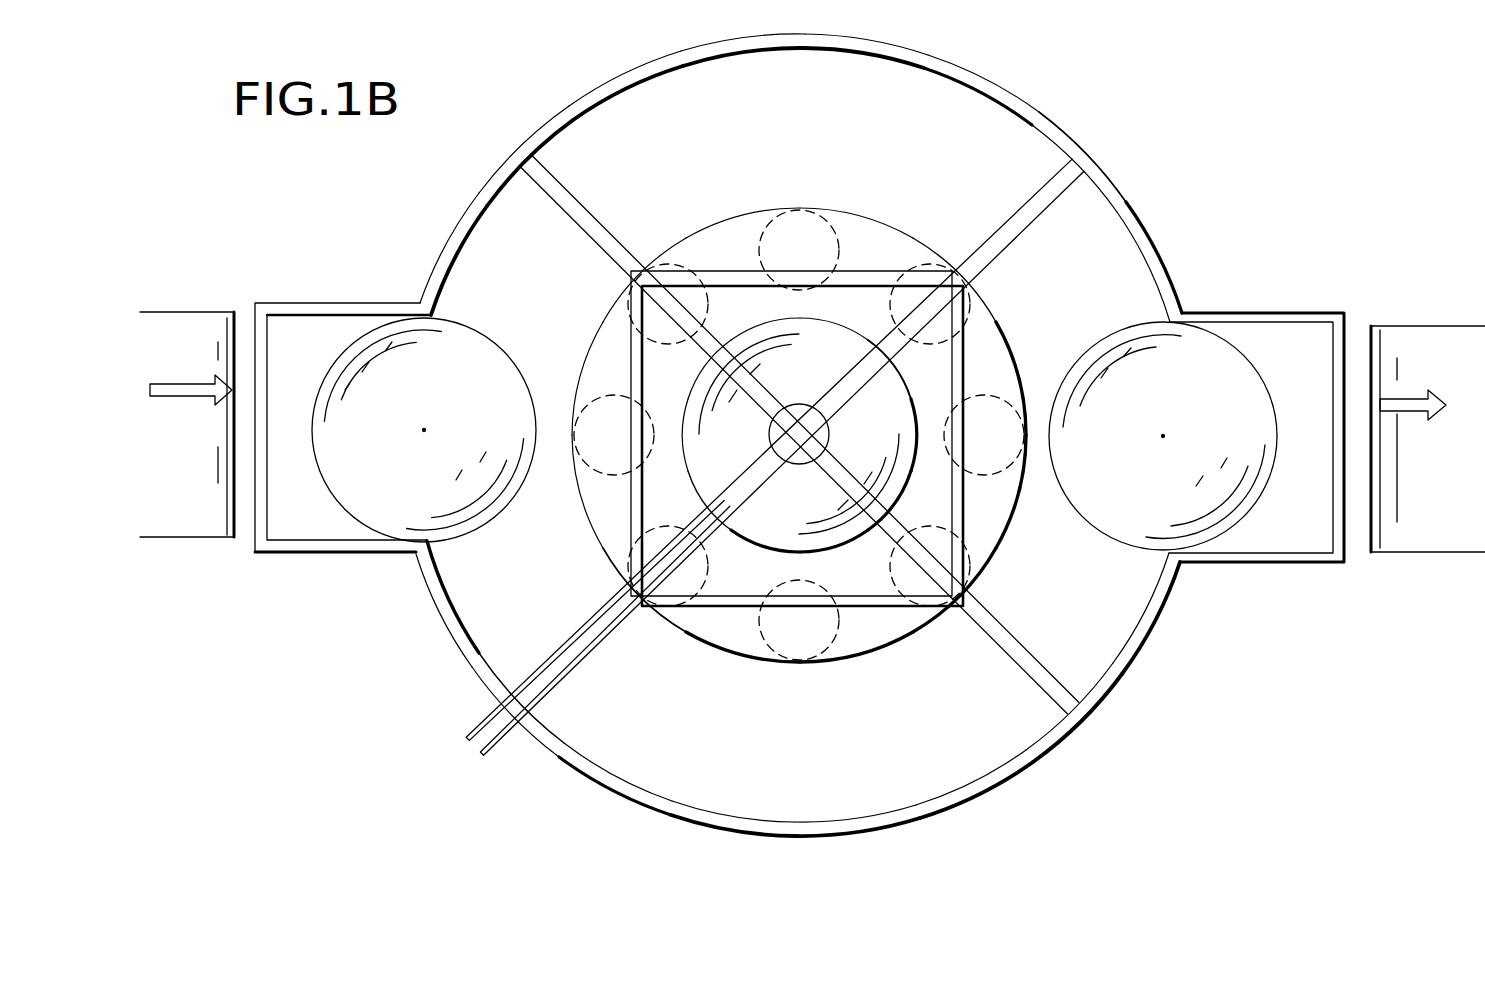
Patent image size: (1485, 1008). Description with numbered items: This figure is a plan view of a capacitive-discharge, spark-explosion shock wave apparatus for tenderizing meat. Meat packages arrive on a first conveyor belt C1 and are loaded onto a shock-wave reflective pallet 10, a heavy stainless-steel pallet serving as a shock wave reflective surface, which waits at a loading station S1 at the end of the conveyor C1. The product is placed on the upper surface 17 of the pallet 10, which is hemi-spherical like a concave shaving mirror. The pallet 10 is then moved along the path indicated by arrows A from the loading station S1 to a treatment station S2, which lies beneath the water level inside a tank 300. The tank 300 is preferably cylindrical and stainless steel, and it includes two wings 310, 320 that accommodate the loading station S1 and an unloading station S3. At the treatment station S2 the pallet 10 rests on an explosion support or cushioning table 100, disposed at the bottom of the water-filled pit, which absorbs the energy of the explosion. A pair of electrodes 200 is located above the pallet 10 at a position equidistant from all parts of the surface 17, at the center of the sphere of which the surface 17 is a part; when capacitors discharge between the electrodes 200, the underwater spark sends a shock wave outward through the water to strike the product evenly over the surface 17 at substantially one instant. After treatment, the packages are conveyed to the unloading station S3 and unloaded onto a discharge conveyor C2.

The shock-wave reflective pallet 10 is at (849, 320).
The upper surface of the pallet 17 is at (463, 388).
The explosion support or cushioning table 100 is at (928, 253).
The pair of electrodes 200 is at (785, 404).
The tank 300 is at (1146, 234).
The wing 310 is at (327, 554).
The wing 320 is at (1264, 567).
The loading station S1 is at (387, 559).
The treatment station S2 is at (850, 556).
The unloading station S3 is at (1219, 549).
The first conveyor belt C1 is at (180, 540).
The discharge conveyor C2 is at (1451, 556).
The arrows A is at (1428, 365).